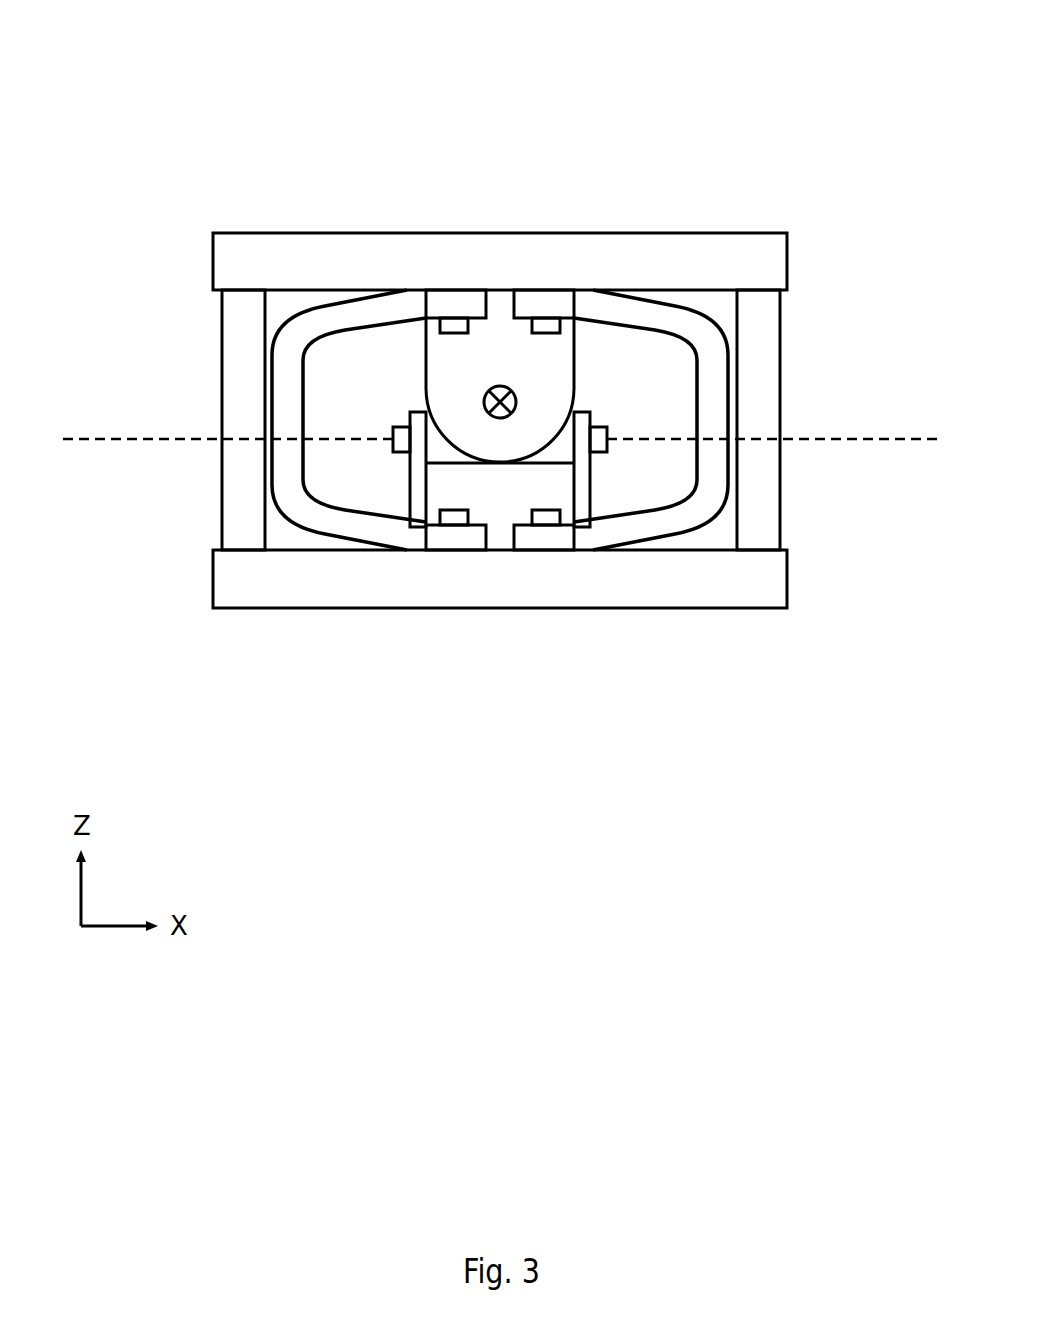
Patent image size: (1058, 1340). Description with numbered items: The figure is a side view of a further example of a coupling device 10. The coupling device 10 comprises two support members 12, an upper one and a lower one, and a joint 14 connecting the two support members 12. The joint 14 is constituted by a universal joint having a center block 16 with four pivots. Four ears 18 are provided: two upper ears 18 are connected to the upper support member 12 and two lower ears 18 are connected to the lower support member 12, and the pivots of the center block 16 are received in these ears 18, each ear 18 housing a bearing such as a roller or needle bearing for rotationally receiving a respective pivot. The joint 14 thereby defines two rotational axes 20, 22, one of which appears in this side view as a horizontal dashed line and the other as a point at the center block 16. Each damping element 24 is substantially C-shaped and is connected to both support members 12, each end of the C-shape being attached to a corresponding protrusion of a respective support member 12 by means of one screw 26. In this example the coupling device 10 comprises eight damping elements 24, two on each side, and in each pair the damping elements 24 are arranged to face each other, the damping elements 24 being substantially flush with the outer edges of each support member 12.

The coupling device 10 is at (502, 348).
The support member 12 is at (400, 262).
The joint 14 is at (388, 388).
The center block 16 is at (547, 453).
The ear 18 is at (517, 366).
The rotational axis 20 is at (78, 440).
The rotational axis 22 is at (516, 401).
The damping element 24 is at (245, 367).
The screw 26 is at (452, 325).